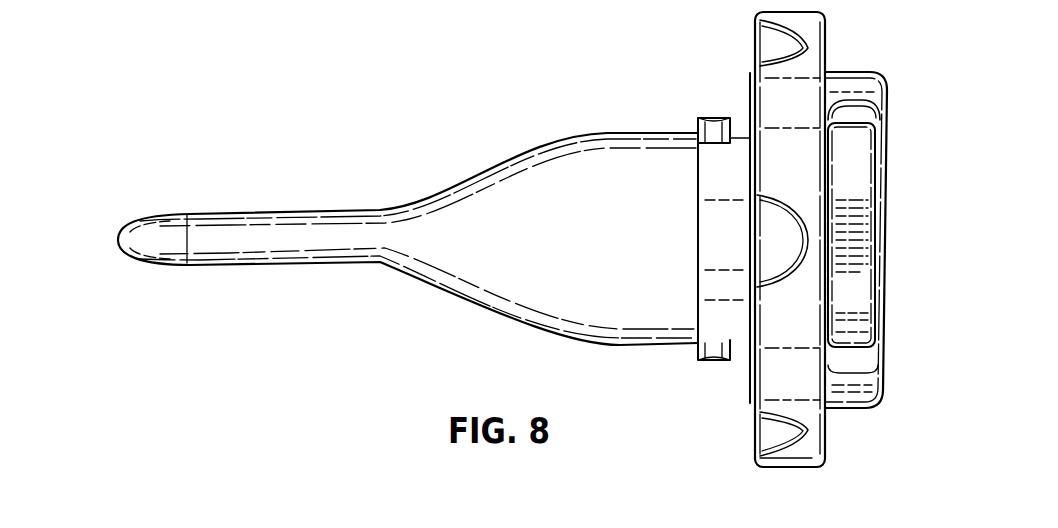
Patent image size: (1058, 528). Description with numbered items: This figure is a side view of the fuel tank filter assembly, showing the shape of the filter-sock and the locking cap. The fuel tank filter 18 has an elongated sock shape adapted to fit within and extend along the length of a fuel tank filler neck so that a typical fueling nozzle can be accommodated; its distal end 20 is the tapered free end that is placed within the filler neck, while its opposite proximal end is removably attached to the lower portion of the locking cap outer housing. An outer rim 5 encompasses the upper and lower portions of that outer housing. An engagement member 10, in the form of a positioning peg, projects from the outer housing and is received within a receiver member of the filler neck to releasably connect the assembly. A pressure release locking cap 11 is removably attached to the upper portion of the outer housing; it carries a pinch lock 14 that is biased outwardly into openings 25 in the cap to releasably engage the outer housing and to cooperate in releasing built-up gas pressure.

The outer rim 5 is at (797, 455).
The engagement member 10 is at (696, 126).
The pressure release locking cap 11 is at (890, 305).
The pinch lock 14 is at (865, 215).
The fuel tank filter 18 is at (504, 288).
The distal end 20 is at (120, 240).
The openings 25 is at (865, 118).